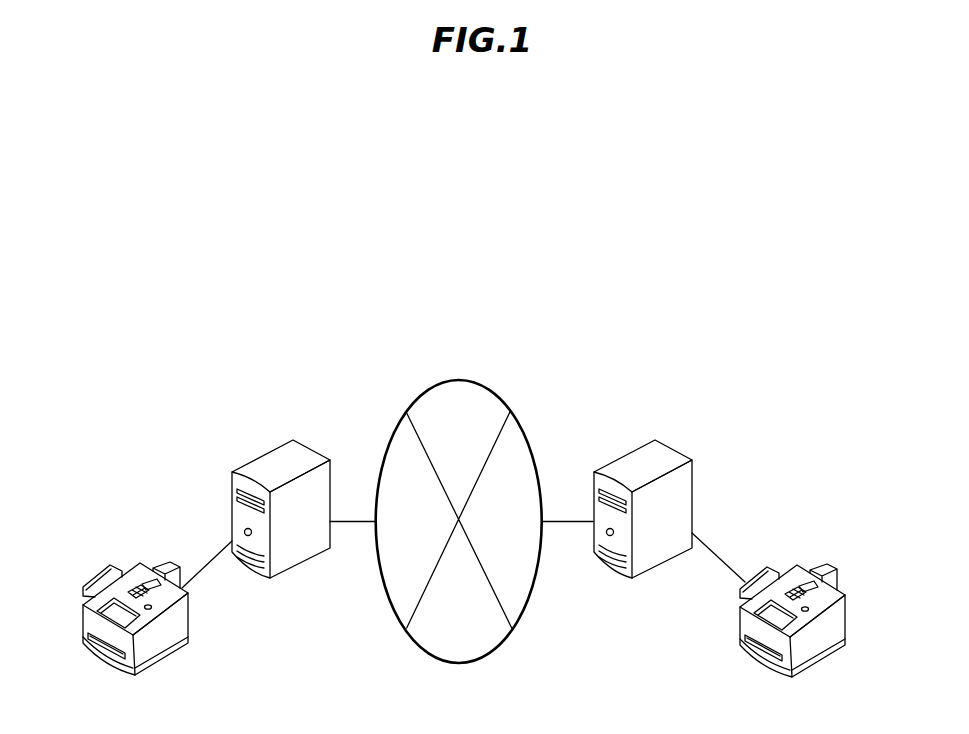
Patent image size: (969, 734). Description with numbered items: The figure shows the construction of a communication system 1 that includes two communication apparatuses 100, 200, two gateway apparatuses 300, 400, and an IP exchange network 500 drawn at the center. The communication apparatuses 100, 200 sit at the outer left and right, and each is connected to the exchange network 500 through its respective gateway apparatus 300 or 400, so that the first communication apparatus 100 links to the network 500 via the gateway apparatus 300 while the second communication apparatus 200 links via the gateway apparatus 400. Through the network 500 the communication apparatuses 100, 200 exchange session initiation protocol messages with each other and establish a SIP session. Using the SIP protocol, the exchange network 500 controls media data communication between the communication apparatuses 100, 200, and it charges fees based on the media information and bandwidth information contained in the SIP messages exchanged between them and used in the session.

The communication system 1 is at (593, 326).
The communication apparatus 100 is at (140, 563).
The communication apparatus 200 is at (824, 563).
The gateway apparatus 300 is at (305, 445).
The gateway apparatus 400 is at (668, 445).
The IP exchange network 500 is at (467, 379).